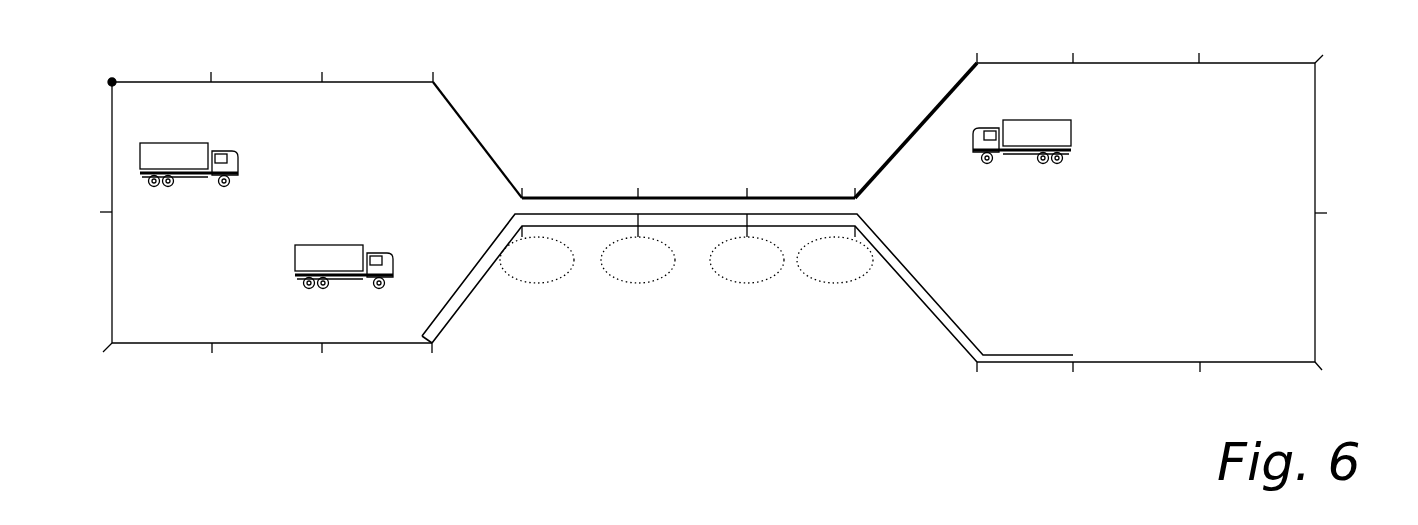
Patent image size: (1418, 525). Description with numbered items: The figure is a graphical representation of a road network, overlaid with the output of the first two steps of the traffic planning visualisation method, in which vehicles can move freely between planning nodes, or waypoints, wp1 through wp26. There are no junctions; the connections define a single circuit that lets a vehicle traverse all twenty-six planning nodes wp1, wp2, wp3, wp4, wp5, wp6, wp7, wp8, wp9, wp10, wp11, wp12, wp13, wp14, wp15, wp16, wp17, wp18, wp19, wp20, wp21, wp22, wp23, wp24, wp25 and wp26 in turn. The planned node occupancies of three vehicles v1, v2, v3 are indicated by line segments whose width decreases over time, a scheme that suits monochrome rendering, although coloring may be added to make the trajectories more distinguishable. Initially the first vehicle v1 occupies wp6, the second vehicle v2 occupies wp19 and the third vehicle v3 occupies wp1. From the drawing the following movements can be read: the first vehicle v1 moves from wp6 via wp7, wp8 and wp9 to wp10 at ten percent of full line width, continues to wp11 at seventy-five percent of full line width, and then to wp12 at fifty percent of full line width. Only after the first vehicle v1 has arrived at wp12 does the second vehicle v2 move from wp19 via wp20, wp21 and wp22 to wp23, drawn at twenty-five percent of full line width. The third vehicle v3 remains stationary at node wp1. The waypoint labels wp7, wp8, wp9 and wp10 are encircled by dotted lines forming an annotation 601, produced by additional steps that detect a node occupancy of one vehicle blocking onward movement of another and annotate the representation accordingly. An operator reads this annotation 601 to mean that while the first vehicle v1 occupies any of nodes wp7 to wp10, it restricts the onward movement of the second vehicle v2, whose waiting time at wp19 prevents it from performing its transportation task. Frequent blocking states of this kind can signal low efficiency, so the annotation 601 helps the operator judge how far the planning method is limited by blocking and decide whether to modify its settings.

The planning node wp1 is at (110, 80).
The planning node wp2 is at (74, 214).
The planning node wp3 is at (78, 367).
The planning node wp4 is at (208, 369).
The planning node wp5 is at (323, 369).
The planning node wp6 is at (433, 369).
The planning node wp7 is at (537, 251).
The planning node wp8 is at (638, 248).
The planning node wp9 is at (747, 248).
The planning node wp10 is at (835, 254).
The planning node wp11 is at (960, 386).
The planning node wp12 is at (1073, 386).
The planning node wp13 is at (1189, 386).
The planning node wp14 is at (1354, 382).
The planning node wp15 is at (1358, 213).
The planning node wp16 is at (1355, 45).
The planning node wp17 is at (1195, 42).
The planning node wp18 is at (1077, 43).
The planning node wp19 is at (970, 43).
The planning node wp20 is at (835, 176).
The planning node wp21 is at (746, 176).
The planning node wp22 is at (642, 176).
The planning node wp23 is at (545, 176).
The planning node wp24 is at (441, 58).
The planning node wp25 is at (324, 58).
The planning node wp26 is at (216, 58).
The first vehicle v1 is at (456, 283).
The second vehicle v2 is at (932, 112).
The third vehicle v3 is at (114, 84).
The annotation 601 is at (545, 283).